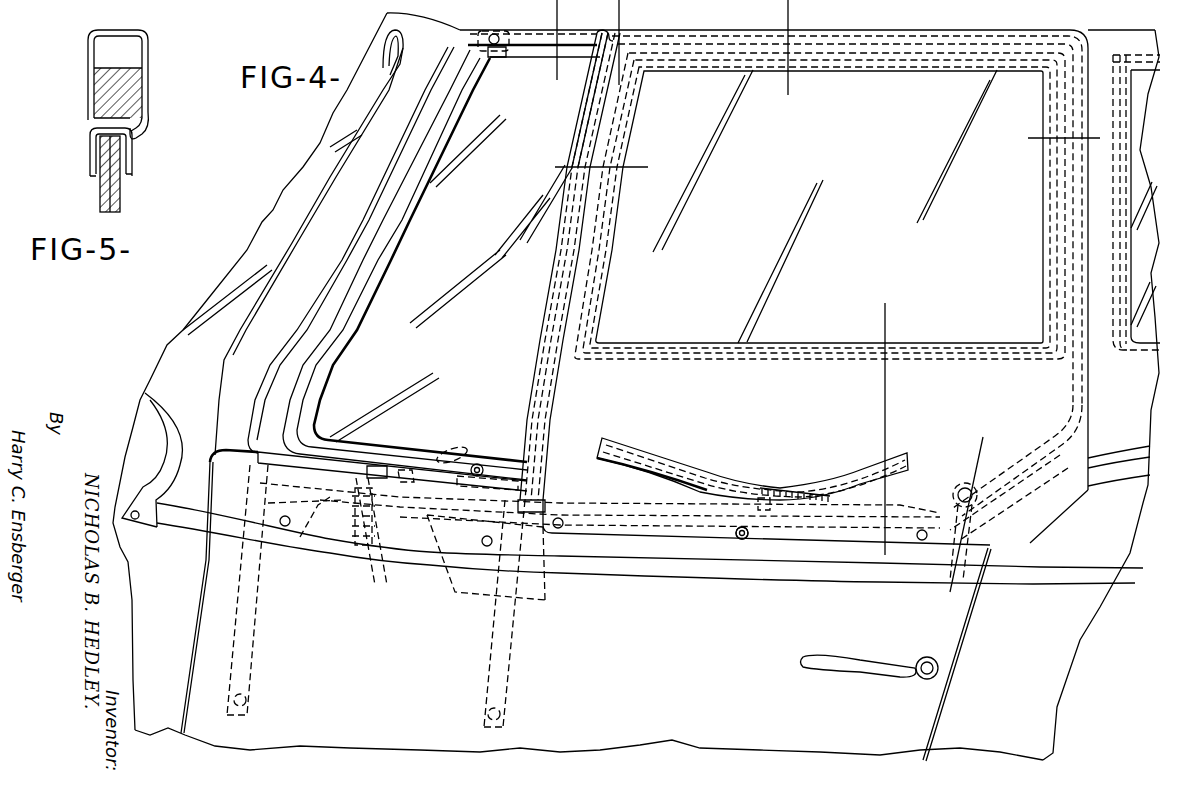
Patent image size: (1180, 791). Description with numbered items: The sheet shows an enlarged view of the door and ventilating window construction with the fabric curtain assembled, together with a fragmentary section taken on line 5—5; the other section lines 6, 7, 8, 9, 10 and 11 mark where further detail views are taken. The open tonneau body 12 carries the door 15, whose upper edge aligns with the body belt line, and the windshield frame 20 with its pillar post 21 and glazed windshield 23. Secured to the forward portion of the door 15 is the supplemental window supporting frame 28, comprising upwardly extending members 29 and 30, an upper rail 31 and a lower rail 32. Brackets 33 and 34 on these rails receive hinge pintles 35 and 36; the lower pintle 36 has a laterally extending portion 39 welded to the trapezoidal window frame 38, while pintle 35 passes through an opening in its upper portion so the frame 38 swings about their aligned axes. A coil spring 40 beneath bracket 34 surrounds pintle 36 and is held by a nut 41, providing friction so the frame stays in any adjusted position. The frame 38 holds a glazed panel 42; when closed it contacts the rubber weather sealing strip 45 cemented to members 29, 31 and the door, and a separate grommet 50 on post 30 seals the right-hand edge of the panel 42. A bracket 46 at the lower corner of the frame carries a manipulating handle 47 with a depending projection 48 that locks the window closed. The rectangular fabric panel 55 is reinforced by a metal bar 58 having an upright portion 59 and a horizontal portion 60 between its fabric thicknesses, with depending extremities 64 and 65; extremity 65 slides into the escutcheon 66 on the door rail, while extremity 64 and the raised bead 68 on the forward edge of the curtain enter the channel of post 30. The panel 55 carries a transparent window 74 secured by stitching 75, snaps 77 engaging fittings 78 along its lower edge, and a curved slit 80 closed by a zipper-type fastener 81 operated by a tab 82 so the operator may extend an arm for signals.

In FIG. 4, the section line 5— 5 is at (557, 8).
In FIG. 4, the section line 6— 6 is at (619, 8).
In FIG. 4, the section line 7— 7 is at (788, 12).
In FIG. 4, the section line 8— 8 is at (559, 155).
In FIG. 4, the section line 9— 9 is at (1033, 126).
In FIG. 4, the section line 10— 10 is at (981, 448).
In FIG. 4, the section line 11— 11 is at (885, 317).
In FIG. 4, the body 12 is at (1078, 648).
In FIG. 4, the door 15 is at (805, 721).
In FIG. 4, the windshield frame 20 is at (167, 341).
In FIG. 4, the pillar post 21 is at (300, 242).
In FIG. 4, the glazed windshield 23 is at (284, 197).
In FIG. 4, the supplemental window supporting frame 28 is at (511, 658).
In FIG. 5, the upwardly extending member 29 is at (90, 49).
In FIG. 4, the upwardly extending member 29 is at (327, 308).
In FIG. 4, the upwardly extending member 30 is at (537, 377).
In FIG. 4, the upper cross member or rail 31 is at (532, 28).
In FIG. 4, the lower cross member or rail 32 is at (354, 510).
In FIG. 4, the clip or bracket 33 is at (513, 50).
In FIG. 4, the clip or bracket 34 is at (380, 513).
In FIG. 4, the hinge pintle 35 is at (490, 30).
In FIG. 4, the hinge pintle 36 is at (376, 466).
In FIG. 5, the window frame 38 is at (94, 139).
In FIG. 4, the window frame 38 is at (318, 377).
In FIG. 4, the laterally extending portion 39 is at (404, 472).
In FIG. 4, the coil spring 40 is at (380, 538).
In FIG. 4, the nut 41 is at (360, 535).
In FIG. 5, the glazed panel 42 is at (118, 192).
In FIG. 4, the glazed panel 42 is at (493, 229).
In FIG. 5, the rubber grommet or weather sealing strip 45 is at (147, 126).
In FIG. 4, the bracket 46 is at (503, 453).
In FIG. 4, the manipulating handle 47 is at (450, 450).
In FIG. 4, the depending projection 48 is at (538, 474).
In FIG. 4, the rubber grommet 50 is at (548, 288).
In FIG. 4, the panel or curtain 55 is at (812, 411).
In FIG. 4, the reinforcing bar 58 is at (1082, 283).
In FIG. 4, the upright portion 59 is at (1088, 371).
In FIG. 4, the horizontal portion 60 is at (897, 33).
In FIG. 4, the depending extremity 64 is at (590, 57).
In FIG. 4, the depending extremity 65 is at (988, 581).
In FIG. 4, the escutcheon or fitting 66 is at (985, 551).
In FIG. 4, the raised bead portion or ridge 68 is at (546, 313).
In FIG. 4, the transparent section or window 74 is at (885, 181).
In FIG. 4, the stitching 75 is at (963, 68).
In FIG. 4, the friction securing buttons or snaps 77 is at (749, 533).
In FIG. 4, the fittings 78 is at (735, 533).
In FIG. 4, the curved slit 80 is at (713, 480).
In FIG. 4, the hookless fastener 81 is at (786, 487).
In FIG. 4, the tab or member 82 is at (766, 503).